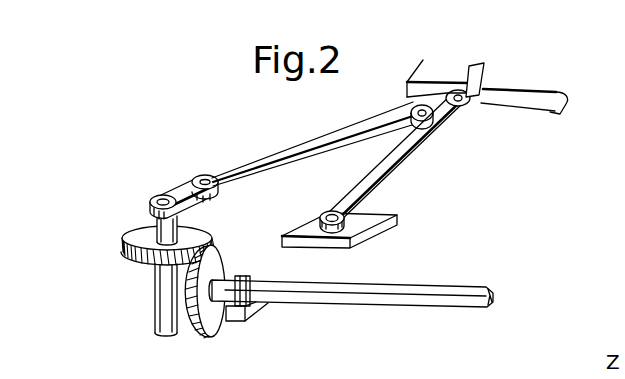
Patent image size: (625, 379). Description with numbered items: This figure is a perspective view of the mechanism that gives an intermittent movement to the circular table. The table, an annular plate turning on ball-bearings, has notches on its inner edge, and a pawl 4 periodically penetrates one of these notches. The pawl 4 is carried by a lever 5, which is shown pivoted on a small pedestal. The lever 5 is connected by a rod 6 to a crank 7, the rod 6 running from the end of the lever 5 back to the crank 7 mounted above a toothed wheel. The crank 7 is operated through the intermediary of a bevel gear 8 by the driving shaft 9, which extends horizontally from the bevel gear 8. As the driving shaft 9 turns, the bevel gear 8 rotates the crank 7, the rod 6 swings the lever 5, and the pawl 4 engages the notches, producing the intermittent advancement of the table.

The pawl 4 is at (476, 95).
The lever 5 is at (410, 139).
The rod 6 is at (290, 153).
The crank 7 is at (180, 194).
The bevel gear 8 is at (215, 325).
The driving shaft 9 is at (345, 296).